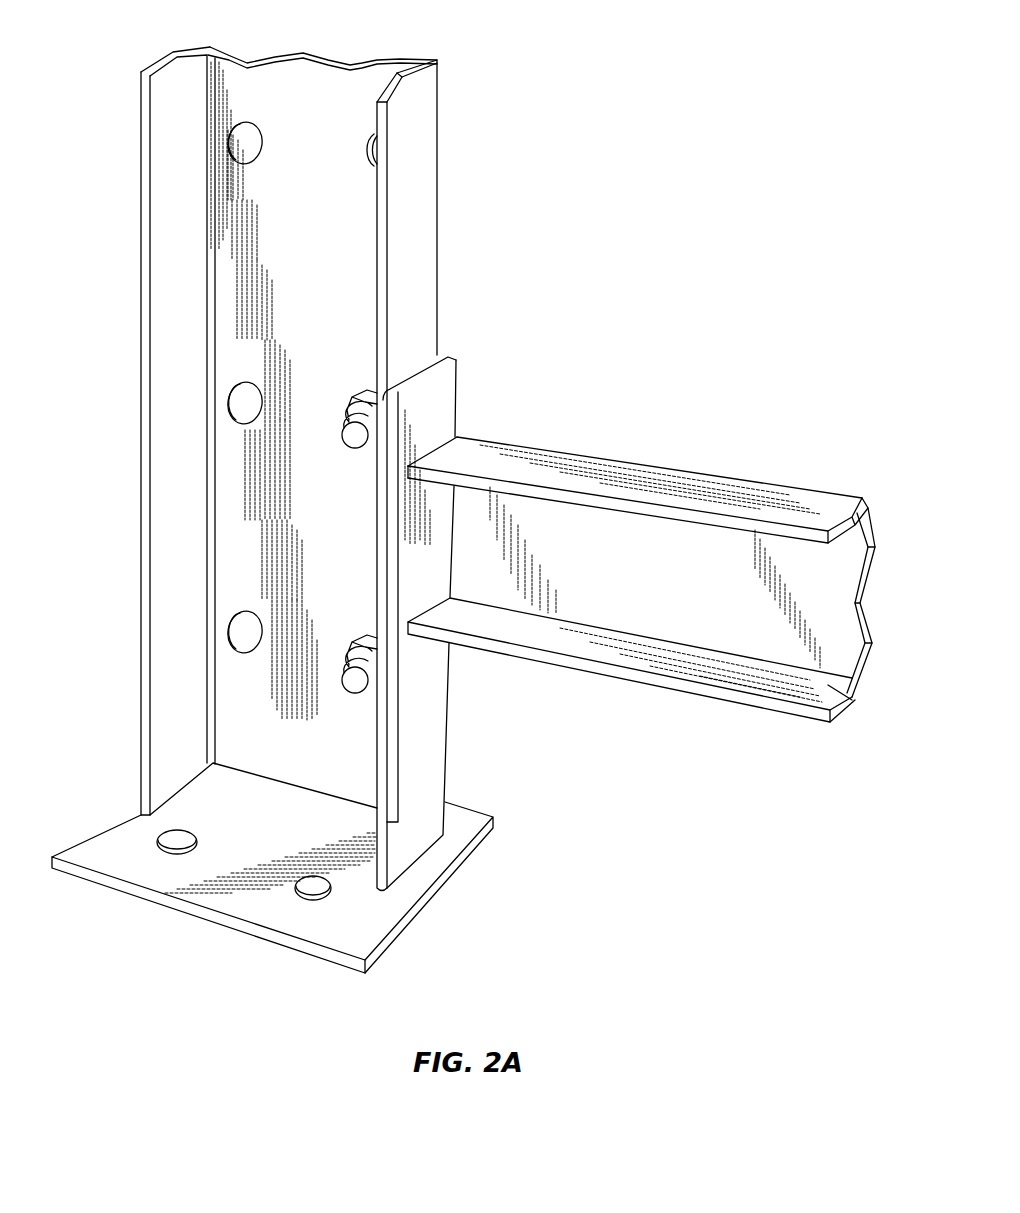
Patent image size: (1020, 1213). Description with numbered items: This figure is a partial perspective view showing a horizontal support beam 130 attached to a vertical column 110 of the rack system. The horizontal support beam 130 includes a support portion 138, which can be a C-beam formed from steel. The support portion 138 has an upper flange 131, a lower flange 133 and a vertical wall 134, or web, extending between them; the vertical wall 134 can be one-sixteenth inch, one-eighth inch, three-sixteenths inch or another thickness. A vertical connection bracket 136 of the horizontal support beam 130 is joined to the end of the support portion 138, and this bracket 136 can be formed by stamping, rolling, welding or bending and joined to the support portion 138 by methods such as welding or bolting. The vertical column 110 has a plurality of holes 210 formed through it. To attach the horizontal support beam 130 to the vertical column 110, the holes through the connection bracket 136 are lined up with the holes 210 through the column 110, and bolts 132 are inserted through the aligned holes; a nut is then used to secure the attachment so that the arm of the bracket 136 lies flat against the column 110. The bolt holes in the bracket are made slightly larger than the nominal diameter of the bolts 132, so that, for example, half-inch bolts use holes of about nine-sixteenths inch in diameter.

The vertical column 110 is at (141, 622).
The holes 210 is at (230, 407).
The horizontal support beam 130 is at (670, 593).
The upper flange 131 is at (787, 503).
The bolts 132 is at (380, 437).
The lower flange 133 is at (853, 702).
The vertical wall 134 is at (834, 597).
The vertical connection bracket 136 is at (423, 745).
The support portion 138 is at (677, 475).